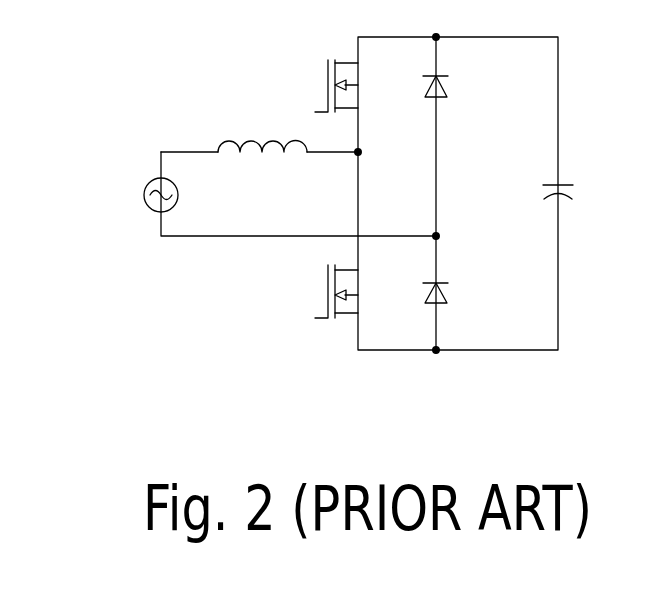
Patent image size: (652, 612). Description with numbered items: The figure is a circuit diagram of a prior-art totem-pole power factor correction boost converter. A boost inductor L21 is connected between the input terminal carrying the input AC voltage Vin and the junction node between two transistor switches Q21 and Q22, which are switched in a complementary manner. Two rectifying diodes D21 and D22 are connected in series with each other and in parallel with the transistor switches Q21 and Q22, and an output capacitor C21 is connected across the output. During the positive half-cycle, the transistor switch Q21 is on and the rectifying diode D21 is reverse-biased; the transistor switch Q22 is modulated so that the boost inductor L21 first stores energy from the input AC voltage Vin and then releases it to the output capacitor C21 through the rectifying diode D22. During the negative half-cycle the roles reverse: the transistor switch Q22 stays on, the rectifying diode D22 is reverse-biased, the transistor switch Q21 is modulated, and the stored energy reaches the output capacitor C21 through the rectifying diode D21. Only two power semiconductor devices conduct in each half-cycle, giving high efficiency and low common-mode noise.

The input AC voltage Vin is at (135, 195).
The boost inductor L21 is at (262, 128).
The transistor switch Q21 is at (361, 86).
The transistor switch Q22 is at (362, 291).
The rectifying diode D21 is at (462, 88).
The rectifying diode D22 is at (462, 297).
The output capacitor C21 is at (590, 263).